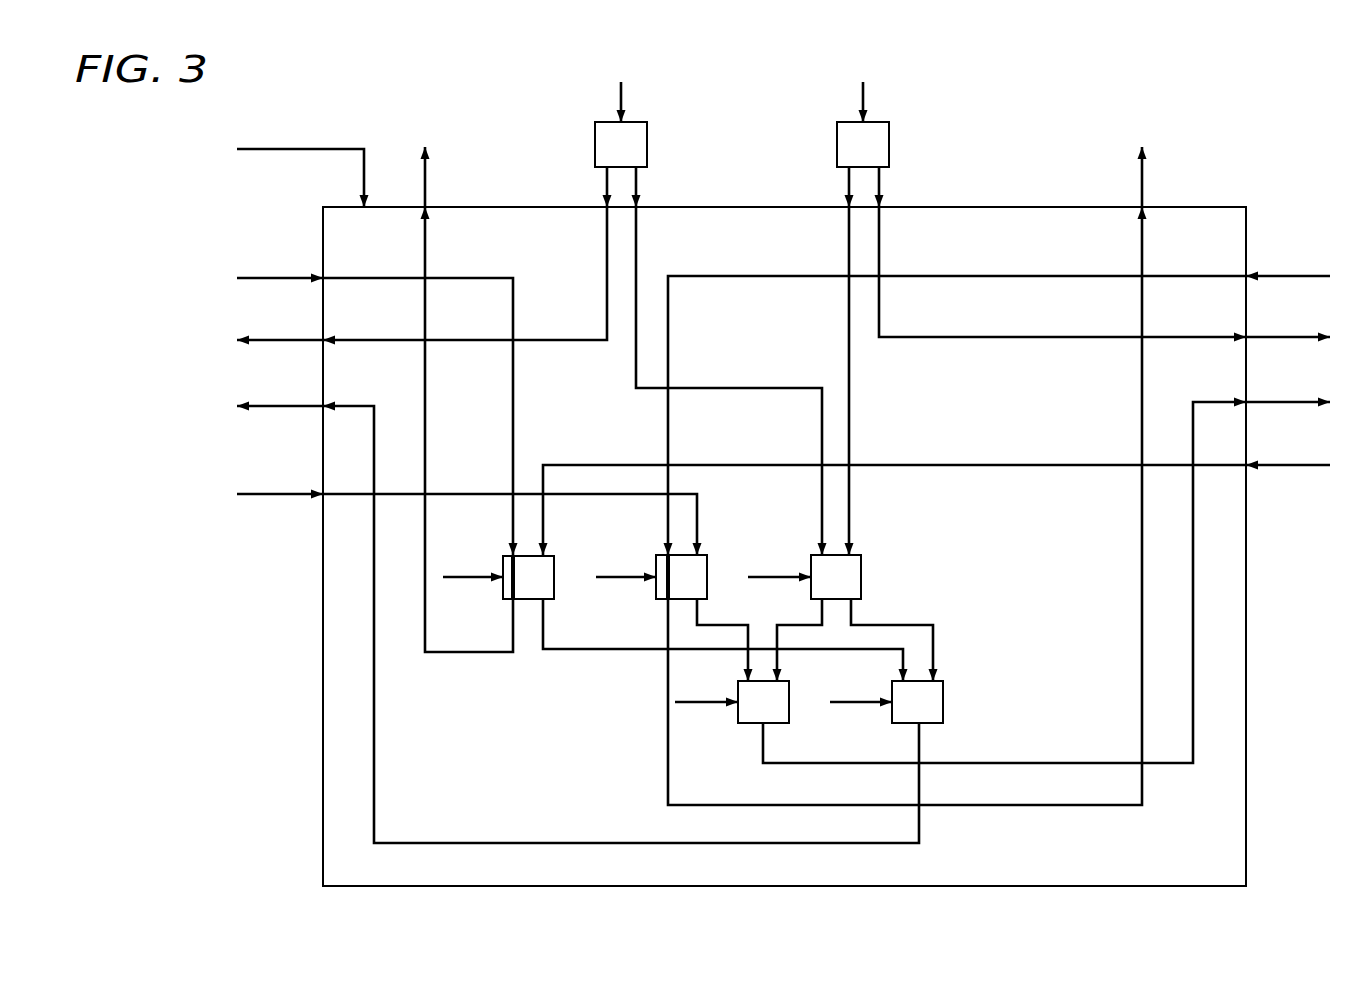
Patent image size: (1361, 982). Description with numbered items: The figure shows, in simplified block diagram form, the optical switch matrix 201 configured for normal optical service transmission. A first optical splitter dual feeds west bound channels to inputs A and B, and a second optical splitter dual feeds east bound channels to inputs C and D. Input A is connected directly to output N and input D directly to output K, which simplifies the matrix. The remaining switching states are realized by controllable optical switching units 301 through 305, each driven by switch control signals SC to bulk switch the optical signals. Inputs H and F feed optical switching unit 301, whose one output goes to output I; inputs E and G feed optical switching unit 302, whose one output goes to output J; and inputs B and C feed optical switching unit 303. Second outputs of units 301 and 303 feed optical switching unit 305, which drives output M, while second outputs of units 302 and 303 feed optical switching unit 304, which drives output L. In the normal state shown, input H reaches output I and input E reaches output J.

The optical switch matrix 201 is at (1193, 207).
The optical switching unit 301 is at (503, 592).
The optical switching unit 302 is at (653, 592).
The optical switching unit 303 is at (861, 577).
The optical switching unit 304 is at (789, 712).
The optical switching unit 305 is at (943, 702).